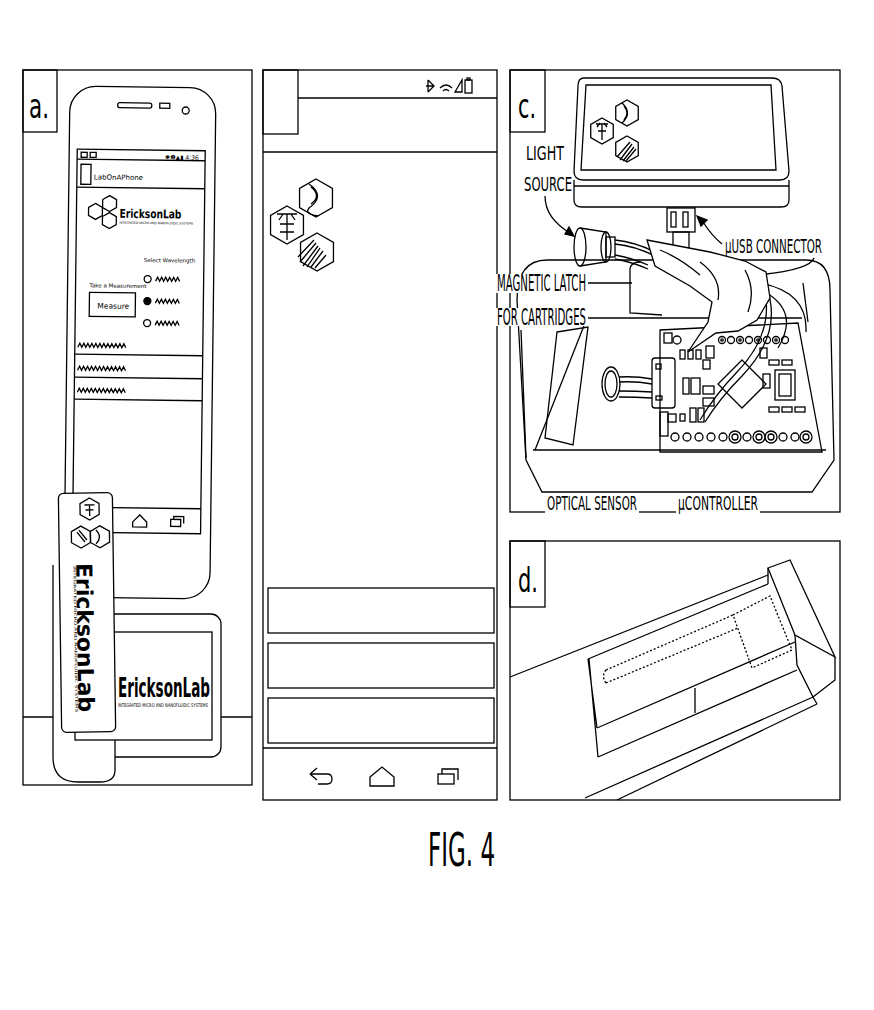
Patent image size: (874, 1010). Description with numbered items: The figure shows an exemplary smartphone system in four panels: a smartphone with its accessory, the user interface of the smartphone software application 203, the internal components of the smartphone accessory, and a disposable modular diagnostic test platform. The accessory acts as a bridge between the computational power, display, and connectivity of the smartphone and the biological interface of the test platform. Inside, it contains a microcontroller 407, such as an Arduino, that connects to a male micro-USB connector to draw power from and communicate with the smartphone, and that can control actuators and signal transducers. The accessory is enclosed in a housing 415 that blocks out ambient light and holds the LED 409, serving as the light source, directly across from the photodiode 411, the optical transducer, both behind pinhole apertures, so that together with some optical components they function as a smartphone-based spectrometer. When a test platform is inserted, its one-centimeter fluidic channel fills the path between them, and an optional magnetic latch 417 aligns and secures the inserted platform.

The smartphone software application 203 is at (376, 70).
The housing 415 is at (768, 119).
The LED 409 is at (790, 275).
The magnetic latch 417 is at (549, 388).
The photodiode 411 is at (602, 412).
The microcontroller 407 is at (733, 420).